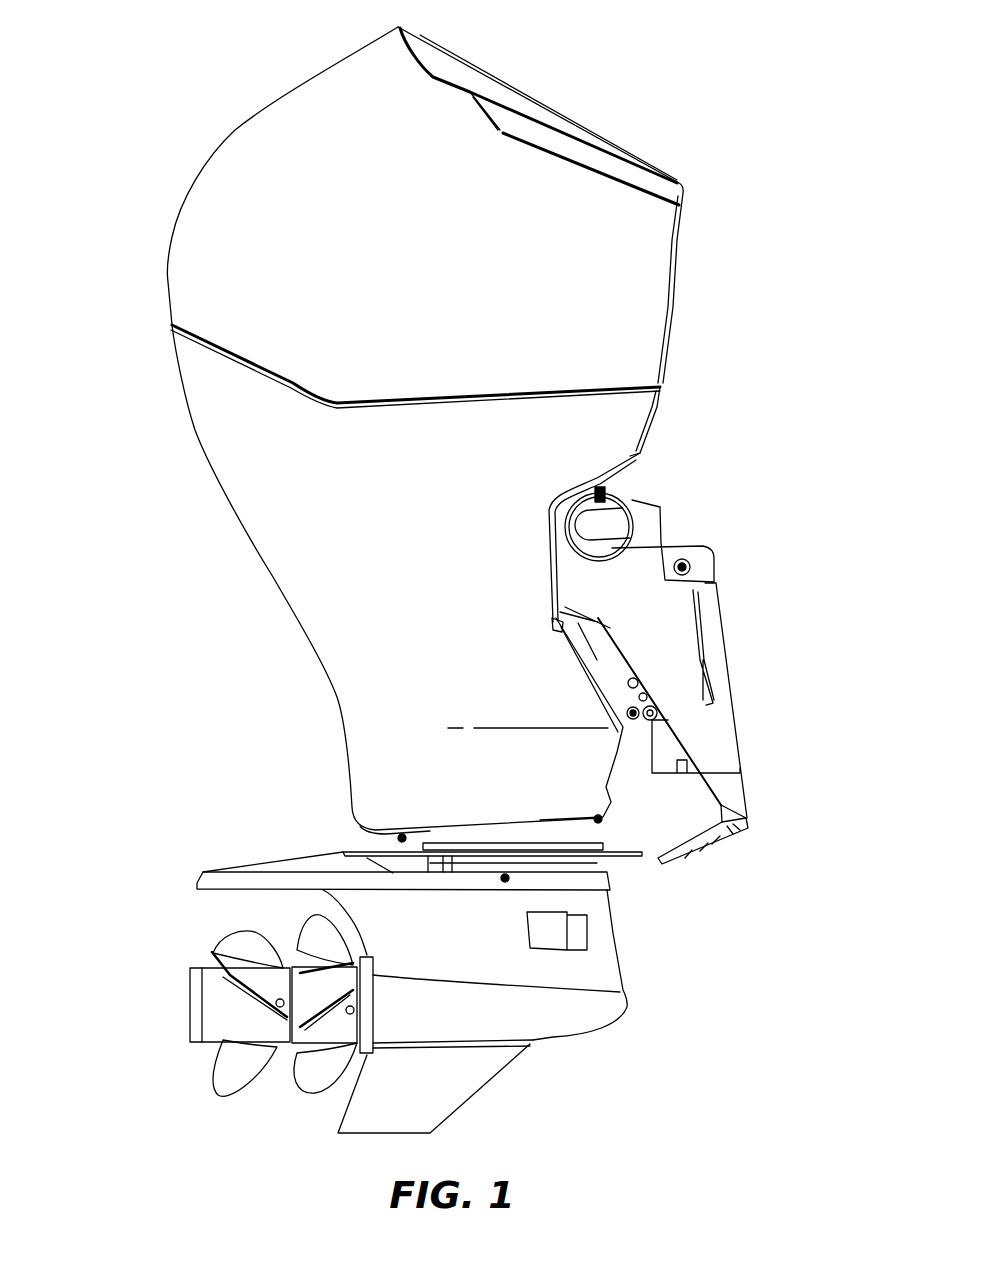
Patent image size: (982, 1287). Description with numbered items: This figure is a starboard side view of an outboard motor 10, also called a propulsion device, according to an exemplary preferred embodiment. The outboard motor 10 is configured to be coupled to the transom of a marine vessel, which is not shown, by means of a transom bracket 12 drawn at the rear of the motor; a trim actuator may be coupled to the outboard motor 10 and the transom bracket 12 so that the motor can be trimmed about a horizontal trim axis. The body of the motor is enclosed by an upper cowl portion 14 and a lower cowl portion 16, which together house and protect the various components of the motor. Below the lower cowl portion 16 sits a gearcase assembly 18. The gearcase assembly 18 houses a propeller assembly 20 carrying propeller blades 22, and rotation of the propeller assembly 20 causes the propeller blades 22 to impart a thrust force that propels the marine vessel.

The outboard motor 10 is at (130, 118).
The transom bracket 12 is at (718, 745).
The upper cowl portion 14 is at (293, 133).
The lower cowl portion 16 is at (252, 468).
The gearcase assembly 18 is at (603, 967).
The propeller assembly 20 is at (238, 1039).
The propeller blades 22 is at (245, 948).